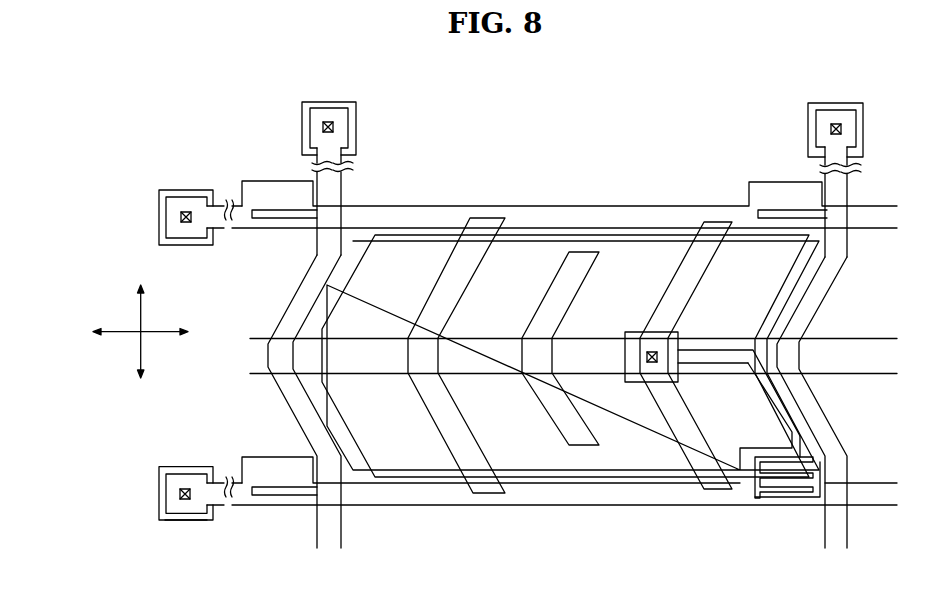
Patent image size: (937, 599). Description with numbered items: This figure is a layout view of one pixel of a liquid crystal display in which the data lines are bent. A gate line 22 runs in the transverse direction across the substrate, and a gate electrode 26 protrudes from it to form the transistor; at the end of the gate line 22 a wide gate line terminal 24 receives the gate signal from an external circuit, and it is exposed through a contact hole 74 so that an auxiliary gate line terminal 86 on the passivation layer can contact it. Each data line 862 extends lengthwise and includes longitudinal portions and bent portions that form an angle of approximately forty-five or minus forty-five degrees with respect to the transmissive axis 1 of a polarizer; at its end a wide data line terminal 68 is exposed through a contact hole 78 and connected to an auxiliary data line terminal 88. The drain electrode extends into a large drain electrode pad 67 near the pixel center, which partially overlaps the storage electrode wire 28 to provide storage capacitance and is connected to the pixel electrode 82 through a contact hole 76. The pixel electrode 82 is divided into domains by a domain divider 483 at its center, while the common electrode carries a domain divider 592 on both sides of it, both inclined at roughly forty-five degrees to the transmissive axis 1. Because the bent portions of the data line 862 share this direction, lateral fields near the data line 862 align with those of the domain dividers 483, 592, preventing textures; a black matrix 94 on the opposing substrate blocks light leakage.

The transmissive axis of a polarizer 1 is at (133, 323).
The gate line 22 is at (551, 506).
The gate line terminal 24 is at (167, 497).
The gate electrode 26 is at (835, 444).
The storage electrode wire 28 is at (266, 336).
The drain electrode pad 67 is at (711, 374).
The data line terminal 68 is at (810, 108).
The contact hole 74 is at (180, 494).
The contact hole 76 is at (652, 364).
The contact hole 78 is at (831, 112).
The pixel electrode 82 is at (420, 240).
The auxiliary gate line terminal 86 is at (190, 521).
The auxiliary data line terminal 88 is at (808, 128).
The black matrix 94 is at (431, 478).
The domain divider of the pixel electrode 483 is at (583, 252).
The domain divider of the common electrode 592 is at (488, 218).
The data line 862 is at (845, 266).